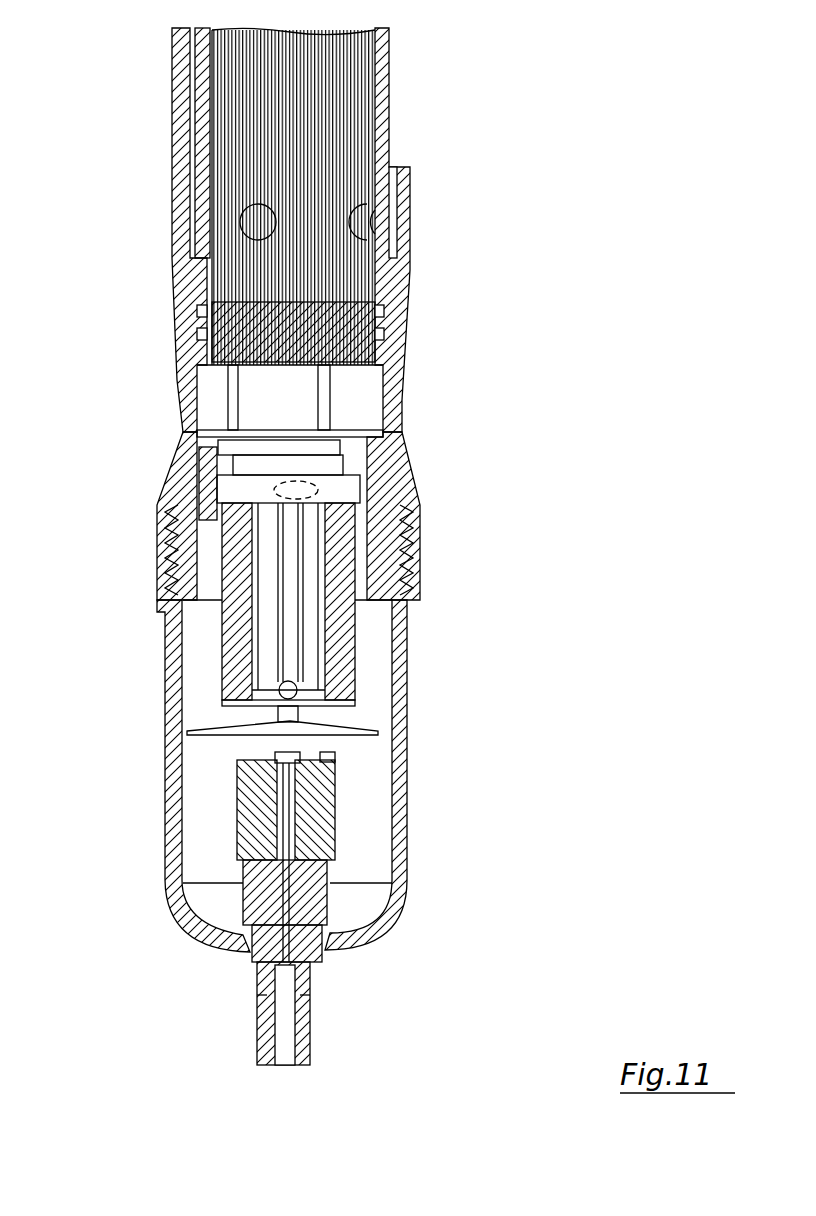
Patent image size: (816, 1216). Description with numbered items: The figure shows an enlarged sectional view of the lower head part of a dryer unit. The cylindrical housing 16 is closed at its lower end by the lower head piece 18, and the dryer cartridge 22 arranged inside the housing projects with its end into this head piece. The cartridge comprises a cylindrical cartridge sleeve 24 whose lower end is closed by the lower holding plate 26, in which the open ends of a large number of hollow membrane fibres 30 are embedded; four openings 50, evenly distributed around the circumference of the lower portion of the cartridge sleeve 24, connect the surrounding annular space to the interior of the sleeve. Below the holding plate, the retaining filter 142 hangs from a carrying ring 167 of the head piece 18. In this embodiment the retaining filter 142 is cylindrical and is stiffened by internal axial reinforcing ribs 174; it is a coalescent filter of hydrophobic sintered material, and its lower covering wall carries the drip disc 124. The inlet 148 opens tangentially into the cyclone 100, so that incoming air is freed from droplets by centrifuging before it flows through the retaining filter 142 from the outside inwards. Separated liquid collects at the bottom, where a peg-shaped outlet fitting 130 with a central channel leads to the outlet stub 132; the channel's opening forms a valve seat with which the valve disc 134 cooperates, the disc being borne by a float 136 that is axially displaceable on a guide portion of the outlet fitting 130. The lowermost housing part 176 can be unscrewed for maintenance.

The cylindrical housing 16 is at (175, 137).
The dryer cartridge 22 is at (390, 108).
The cartridge sleeve 24 is at (205, 66).
The hollow membrane fibres 30 is at (235, 100).
The openings 50 is at (250, 245).
The lower holding plate 26 is at (225, 330).
The lower head piece 18 is at (182, 490).
The carrying ring 167 is at (355, 440).
The inlet 148 is at (420, 493).
The internal axial reinforcing ribs 174 is at (283, 562).
The retaining filter 142 is at (348, 628).
The drip disc 124 is at (357, 723).
The cyclone 100 is at (163, 640).
The lowermost housing part 176 is at (405, 750).
The valve disc 134 is at (287, 752).
The float 136 is at (240, 812).
The outlet fitting 130 is at (250, 958).
The outlet stub 132 is at (258, 1040).